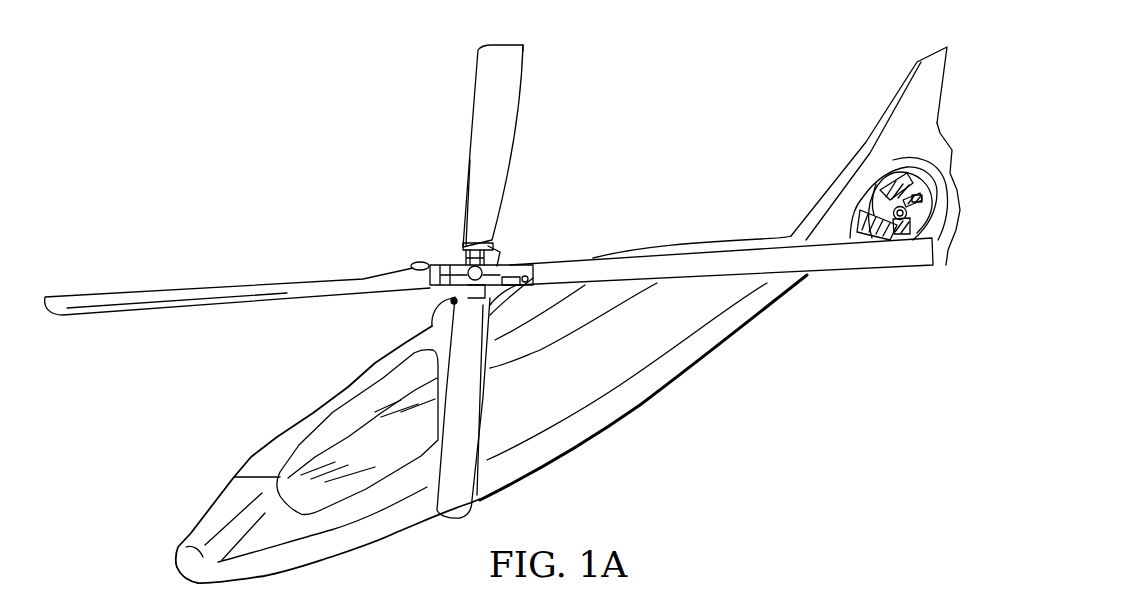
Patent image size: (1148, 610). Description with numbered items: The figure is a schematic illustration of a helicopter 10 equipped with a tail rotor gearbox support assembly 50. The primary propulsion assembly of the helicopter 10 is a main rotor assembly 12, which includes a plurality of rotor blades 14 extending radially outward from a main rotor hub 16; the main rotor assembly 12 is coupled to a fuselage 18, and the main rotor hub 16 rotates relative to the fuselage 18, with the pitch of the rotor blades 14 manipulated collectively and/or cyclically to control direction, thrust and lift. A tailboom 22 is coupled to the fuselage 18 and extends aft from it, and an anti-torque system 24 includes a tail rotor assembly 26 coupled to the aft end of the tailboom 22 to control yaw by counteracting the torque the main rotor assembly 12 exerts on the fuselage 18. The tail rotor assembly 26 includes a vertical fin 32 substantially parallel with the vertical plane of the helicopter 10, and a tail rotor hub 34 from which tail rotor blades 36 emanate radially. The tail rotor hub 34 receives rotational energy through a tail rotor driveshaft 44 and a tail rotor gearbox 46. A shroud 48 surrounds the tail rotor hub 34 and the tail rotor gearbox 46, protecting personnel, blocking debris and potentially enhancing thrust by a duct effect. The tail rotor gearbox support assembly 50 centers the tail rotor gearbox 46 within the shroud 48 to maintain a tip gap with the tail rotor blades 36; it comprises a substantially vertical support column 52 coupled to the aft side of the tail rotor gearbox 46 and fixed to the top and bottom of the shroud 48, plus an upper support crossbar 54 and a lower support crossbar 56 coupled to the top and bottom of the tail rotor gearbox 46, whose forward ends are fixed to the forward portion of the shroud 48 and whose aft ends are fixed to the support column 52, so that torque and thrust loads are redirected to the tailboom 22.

The helicopter 10 is at (328, 144).
The main rotor assembly 12 is at (514, 251).
The rotor blades 14 is at (510, 73).
The main rotor hub 16 is at (455, 265).
The fuselage 18 is at (522, 480).
The tailboom 22 is at (730, 332).
The anti-torque system 24 is at (945, 132).
The tail rotor assembly 26 is at (946, 265).
The vertical fin 32 is at (908, 63).
The tail rotor hub 34 is at (890, 157).
The tail rotor blades 36 is at (916, 238).
The tail rotor driveshaft 44 is at (868, 207).
The tail rotor gearbox 46 is at (903, 240).
The shroud 48 is at (933, 170).
The tail rotor gearbox support assembly 50 is at (882, 246).
The support column 52 is at (892, 170).
The upper support crossbar 54 is at (873, 180).
The lower support crossbar 56 is at (860, 237).